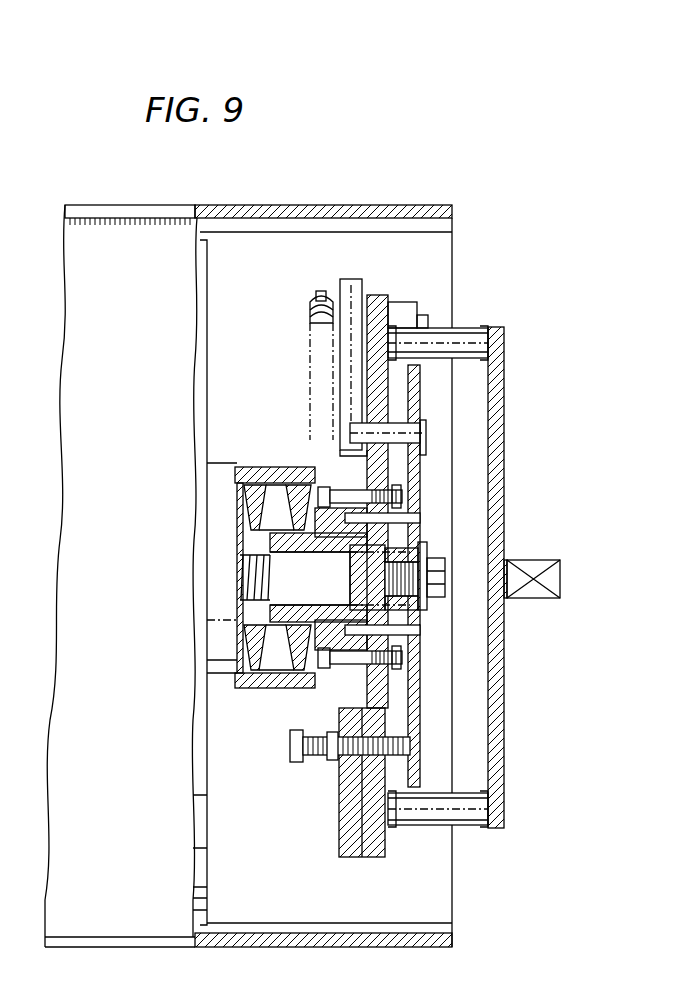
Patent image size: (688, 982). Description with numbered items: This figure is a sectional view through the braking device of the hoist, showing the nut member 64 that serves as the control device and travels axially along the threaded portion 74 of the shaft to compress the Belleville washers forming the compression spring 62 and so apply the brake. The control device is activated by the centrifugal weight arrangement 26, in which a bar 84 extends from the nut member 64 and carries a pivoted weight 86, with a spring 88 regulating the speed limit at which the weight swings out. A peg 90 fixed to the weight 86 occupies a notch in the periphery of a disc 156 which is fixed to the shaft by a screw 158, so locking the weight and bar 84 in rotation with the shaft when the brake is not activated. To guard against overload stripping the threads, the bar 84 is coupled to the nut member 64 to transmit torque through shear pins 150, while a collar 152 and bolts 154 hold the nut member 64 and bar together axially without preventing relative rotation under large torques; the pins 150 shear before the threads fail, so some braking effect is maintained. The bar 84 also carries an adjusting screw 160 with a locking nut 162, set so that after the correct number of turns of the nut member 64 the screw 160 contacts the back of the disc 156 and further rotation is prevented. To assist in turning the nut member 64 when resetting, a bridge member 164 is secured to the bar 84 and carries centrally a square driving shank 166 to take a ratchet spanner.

The centrifugal weight arrangement 26 is at (396, 293).
The compression spring 62 is at (262, 690).
The nut member 64 is at (283, 467).
The threaded portion 74 is at (270, 578).
The bar 84 is at (373, 705).
The pivoted weight 86 is at (350, 322).
The spring 88 is at (312, 316).
The peg 90 is at (410, 435).
The shear pins 150 is at (400, 515).
The collar 152 is at (324, 668).
The bolts 154 is at (402, 490).
The disc 156 is at (400, 458).
The screw 158 is at (445, 572).
The adjusting screw 160 is at (298, 762).
The locking nut 162 is at (333, 762).
The bridge member 164 is at (497, 700).
The square driving shank 166 is at (557, 580).